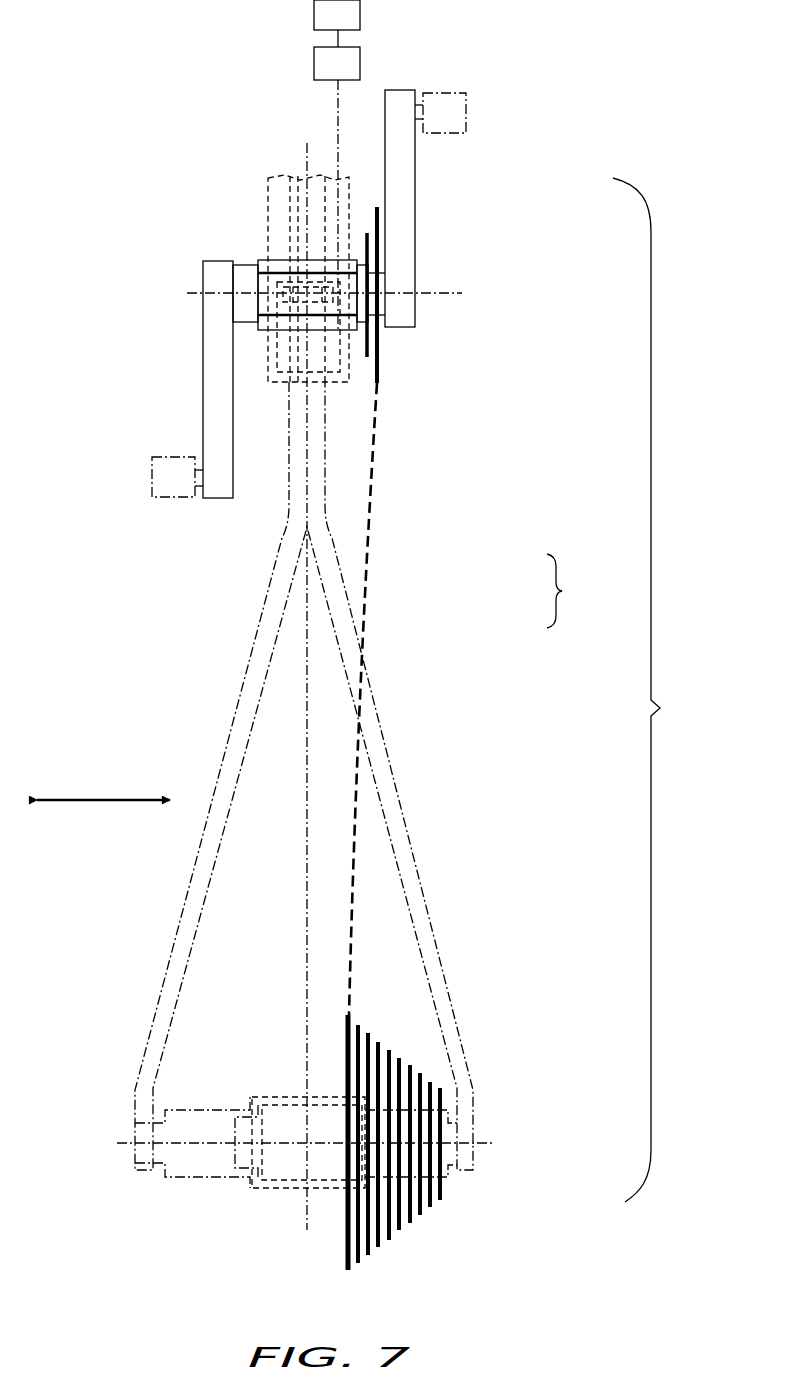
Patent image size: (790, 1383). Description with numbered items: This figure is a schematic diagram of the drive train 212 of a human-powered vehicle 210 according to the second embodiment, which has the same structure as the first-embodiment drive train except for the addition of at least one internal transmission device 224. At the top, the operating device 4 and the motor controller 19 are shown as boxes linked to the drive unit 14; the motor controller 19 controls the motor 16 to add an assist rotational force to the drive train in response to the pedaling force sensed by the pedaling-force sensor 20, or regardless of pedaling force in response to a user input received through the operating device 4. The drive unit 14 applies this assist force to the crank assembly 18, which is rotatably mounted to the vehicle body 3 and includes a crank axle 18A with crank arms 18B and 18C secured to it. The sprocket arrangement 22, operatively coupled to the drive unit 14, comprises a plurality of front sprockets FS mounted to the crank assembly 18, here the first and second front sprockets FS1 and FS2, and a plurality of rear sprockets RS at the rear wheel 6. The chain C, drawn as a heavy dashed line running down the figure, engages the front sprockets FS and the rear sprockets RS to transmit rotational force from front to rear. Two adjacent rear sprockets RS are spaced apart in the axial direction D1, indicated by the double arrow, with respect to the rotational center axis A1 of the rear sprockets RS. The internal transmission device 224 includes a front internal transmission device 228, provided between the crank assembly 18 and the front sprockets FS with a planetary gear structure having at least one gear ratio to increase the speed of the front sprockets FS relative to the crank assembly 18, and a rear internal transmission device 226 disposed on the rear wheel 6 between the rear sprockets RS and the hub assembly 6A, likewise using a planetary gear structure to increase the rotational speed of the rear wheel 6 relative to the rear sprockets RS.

The operating device 4 is at (327, 26).
The motor controller 19 is at (350, 76).
The human-powered vehicle 210 is at (642, 624).
The drive train 212 is at (661, 690).
The crank assembly 18 is at (164, 233).
The crank axle 18A is at (280, 258).
The crank arm 18B is at (419, 206).
The crank arm 18C is at (201, 371).
The motor 16 is at (272, 364).
The drive unit 14 is at (266, 185).
The pedaling-force sensor 20 is at (297, 205).
The vehicle body 3 is at (258, 616).
The chain C is at (372, 570).
The sprocket arrangement 22 is at (407, 738).
The internal transmission device 224 is at (382, 738).
The front internal transmission device 228 is at (449, 310).
The rear internal transmission device 226 is at (283, 1098).
The front sprockets FS is at (454, 398).
The first front sprocket FS1 is at (371, 337).
The second front sprocket FS2 is at (380, 363).
The rear sprockets RS is at (389, 1025).
The axial direction D1 is at (108, 800).
The rotational center axis A1 is at (483, 1143).
The rear wheel 6 is at (214, 1182).
The hub assembly 6A is at (176, 1178).